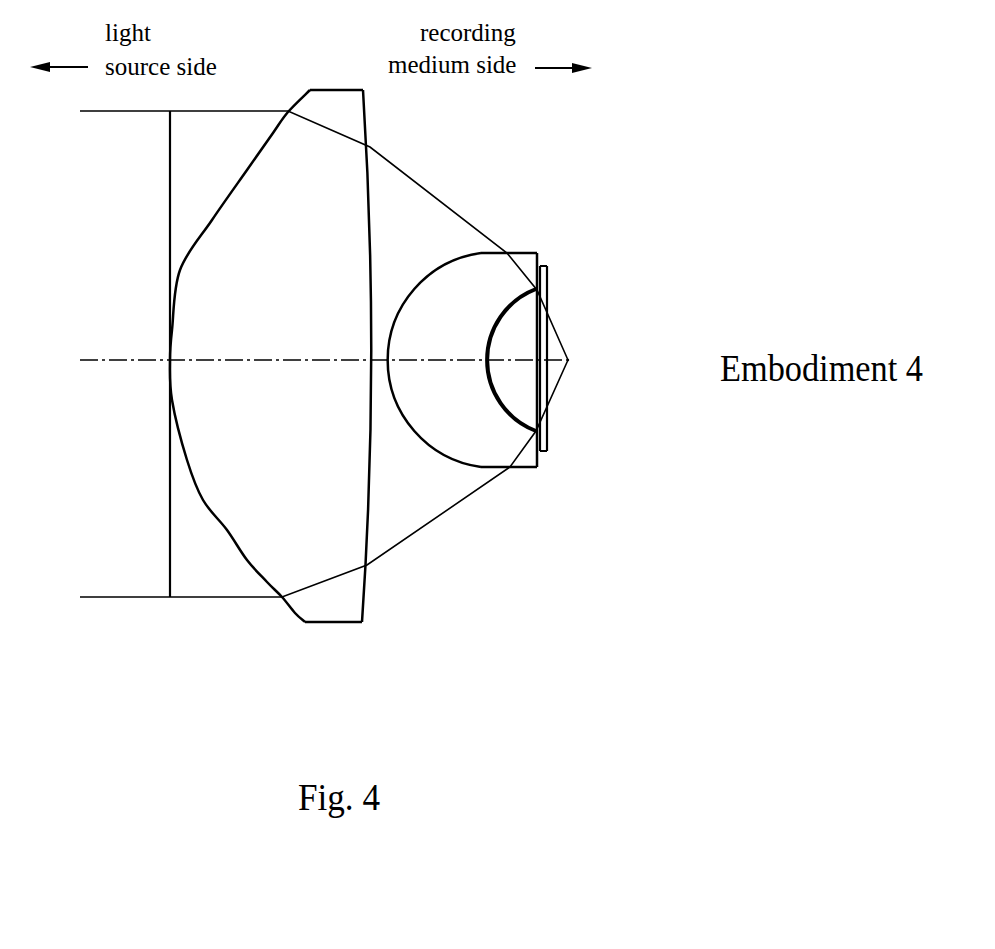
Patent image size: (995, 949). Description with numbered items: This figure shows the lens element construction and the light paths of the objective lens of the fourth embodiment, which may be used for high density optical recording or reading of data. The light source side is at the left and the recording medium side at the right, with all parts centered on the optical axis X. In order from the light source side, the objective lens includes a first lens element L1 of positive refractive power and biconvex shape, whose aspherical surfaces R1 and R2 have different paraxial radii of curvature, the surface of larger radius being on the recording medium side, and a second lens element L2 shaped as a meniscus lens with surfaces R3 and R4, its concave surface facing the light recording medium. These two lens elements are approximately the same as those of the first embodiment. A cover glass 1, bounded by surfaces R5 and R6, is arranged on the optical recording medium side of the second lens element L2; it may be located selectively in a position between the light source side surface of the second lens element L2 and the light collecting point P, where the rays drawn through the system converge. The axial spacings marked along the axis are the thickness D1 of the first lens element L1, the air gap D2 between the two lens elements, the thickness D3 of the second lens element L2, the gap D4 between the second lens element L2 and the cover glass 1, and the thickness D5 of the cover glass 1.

The cover glass 1 is at (542, 373).
The first lens element L1 is at (296, 356).
The second lens element L2 is at (466, 381).
The light source side surface of first lens R1 is at (203, 498).
The recording medium side surface of first lens R2 is at (367, 478).
The light source side surface of second lens R3 is at (415, 430).
The recording medium side surface of second lens R4 is at (492, 375).
The light source side surface of recording medium R5 is at (538, 402).
The recording surface side of recording medium R6 is at (550, 380).
The axial thickness of first lens D1 is at (244, 358).
The axial air gap between first lens and second lens D2 is at (380, 358).
The axial thickness of second lens D3 is at (437, 357).
The axial air gap between second lens and recording medium D4 is at (511, 360).
The thickness of recording medium D5 is at (548, 349).
The light collecting point P is at (568, 361).
The optical axis X is at (95, 360).